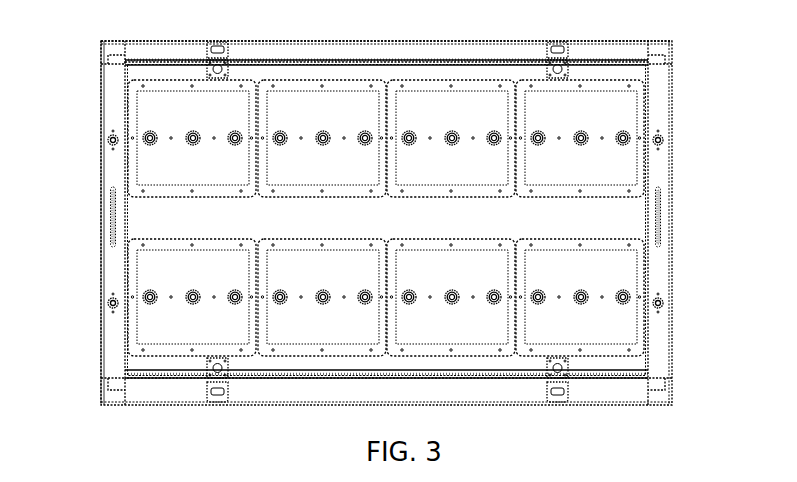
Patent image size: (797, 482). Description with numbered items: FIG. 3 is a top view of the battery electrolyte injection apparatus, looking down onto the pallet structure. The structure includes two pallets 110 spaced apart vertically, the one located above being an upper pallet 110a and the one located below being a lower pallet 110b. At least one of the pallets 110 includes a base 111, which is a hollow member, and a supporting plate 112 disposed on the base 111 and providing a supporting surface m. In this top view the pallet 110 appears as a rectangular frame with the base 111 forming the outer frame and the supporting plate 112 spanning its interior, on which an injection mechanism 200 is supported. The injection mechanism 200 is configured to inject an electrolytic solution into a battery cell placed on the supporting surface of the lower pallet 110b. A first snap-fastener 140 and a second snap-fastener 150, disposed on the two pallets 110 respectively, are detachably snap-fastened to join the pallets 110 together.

The pallet 110 is at (446, 223).
The base 111 is at (661, 173).
The supporting plate 112 is at (618, 227).
The upper pallet 110a is at (110, 177).
The lower pallet 110b is at (106, 44).
The first snap-fastener 140 is at (547, 64).
The second snap-fastener 150 is at (561, 42).
The injection mechanism 200 is at (625, 110).